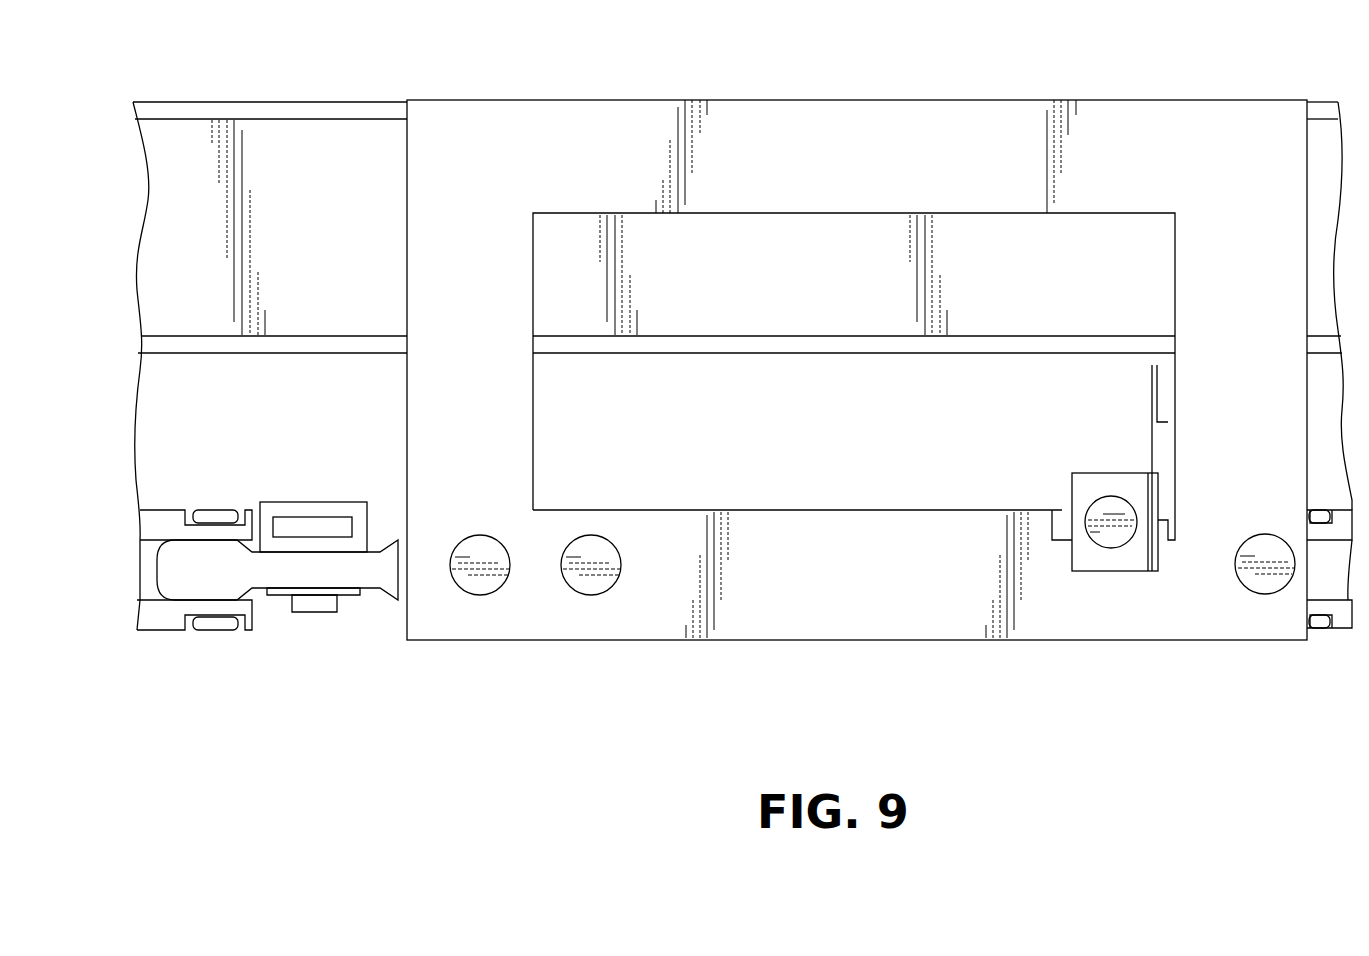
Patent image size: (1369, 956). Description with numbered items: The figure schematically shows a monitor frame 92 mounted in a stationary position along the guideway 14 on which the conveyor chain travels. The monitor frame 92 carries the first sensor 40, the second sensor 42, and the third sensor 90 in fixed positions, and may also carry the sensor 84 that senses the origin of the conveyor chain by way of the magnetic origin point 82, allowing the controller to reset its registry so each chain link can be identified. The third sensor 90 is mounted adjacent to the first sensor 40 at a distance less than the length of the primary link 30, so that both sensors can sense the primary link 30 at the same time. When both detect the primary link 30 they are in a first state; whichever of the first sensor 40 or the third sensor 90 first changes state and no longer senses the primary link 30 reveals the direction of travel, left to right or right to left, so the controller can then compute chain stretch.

The guideway 14 is at (297, 215).
The monitor frame 92 is at (877, 167).
The primary link 30 is at (198, 573).
The magnetic origin point 82 is at (315, 520).
The first sensor 40 is at (483, 570).
The third sensor 90 is at (590, 568).
The sensor 84 is at (1115, 530).
The second sensor 42 is at (1265, 575).